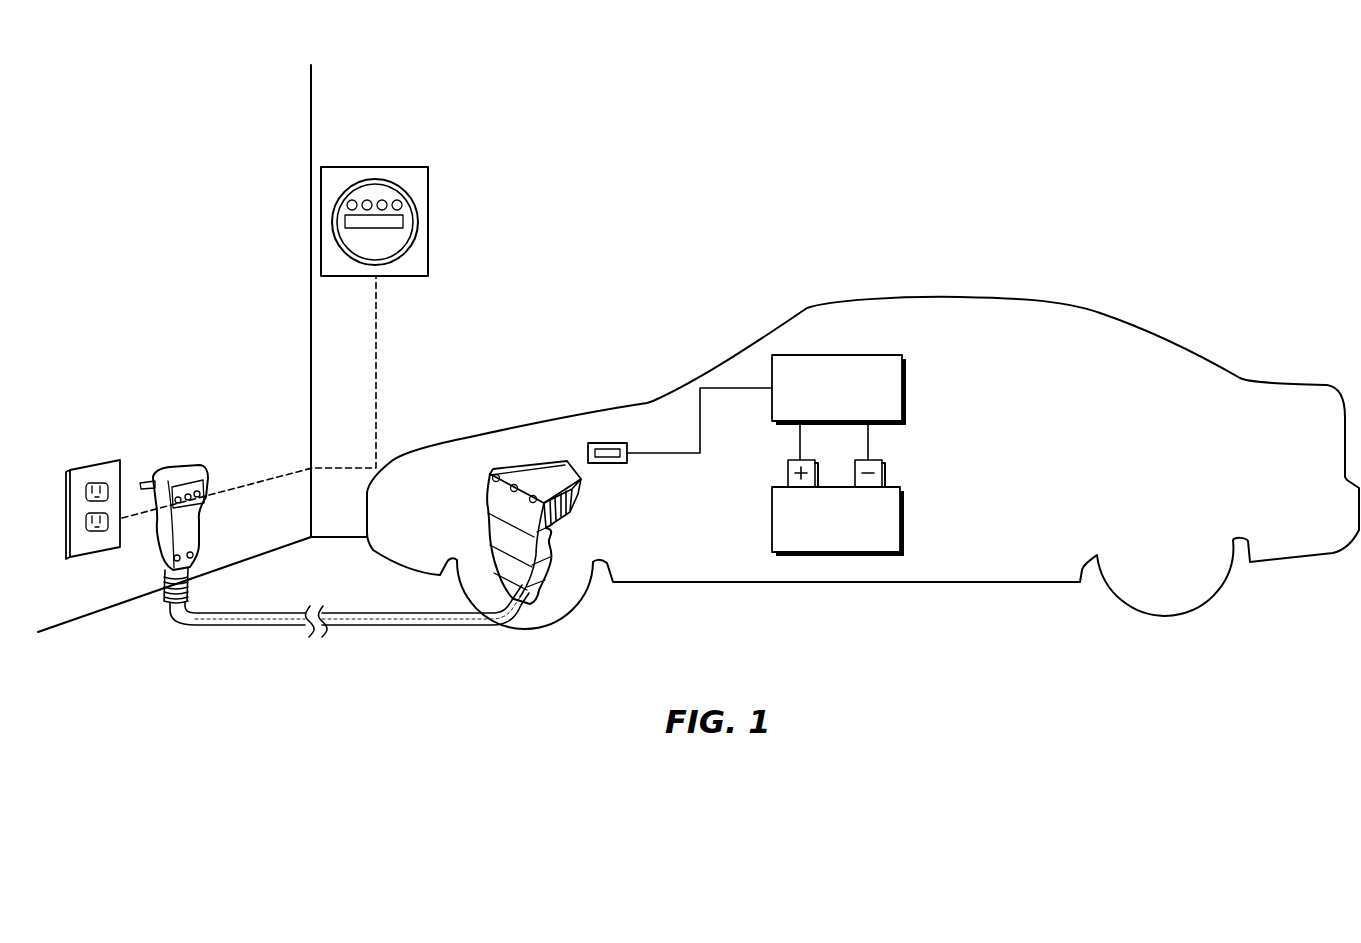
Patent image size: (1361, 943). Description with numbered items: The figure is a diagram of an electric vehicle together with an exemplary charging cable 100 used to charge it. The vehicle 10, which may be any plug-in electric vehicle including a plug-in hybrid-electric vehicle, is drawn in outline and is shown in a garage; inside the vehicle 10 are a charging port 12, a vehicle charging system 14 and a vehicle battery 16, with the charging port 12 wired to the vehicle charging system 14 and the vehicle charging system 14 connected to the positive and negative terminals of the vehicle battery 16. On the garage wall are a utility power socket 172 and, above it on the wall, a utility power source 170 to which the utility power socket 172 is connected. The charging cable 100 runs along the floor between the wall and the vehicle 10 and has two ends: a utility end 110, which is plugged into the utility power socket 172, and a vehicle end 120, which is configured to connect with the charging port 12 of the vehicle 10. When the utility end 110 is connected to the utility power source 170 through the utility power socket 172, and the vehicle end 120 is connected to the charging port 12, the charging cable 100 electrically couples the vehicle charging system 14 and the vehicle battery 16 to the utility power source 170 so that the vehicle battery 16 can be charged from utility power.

The vehicle 10 is at (1046, 299).
The charging port 12 is at (600, 443).
The vehicle charging system 14 is at (903, 365).
The vehicle battery 16 is at (903, 502).
The charging cable 100 is at (240, 627).
The utility end 110 is at (191, 468).
The vehicle end 120 is at (489, 509).
The utility power source 170 is at (401, 167).
The utility power socket 172 is at (92, 462).